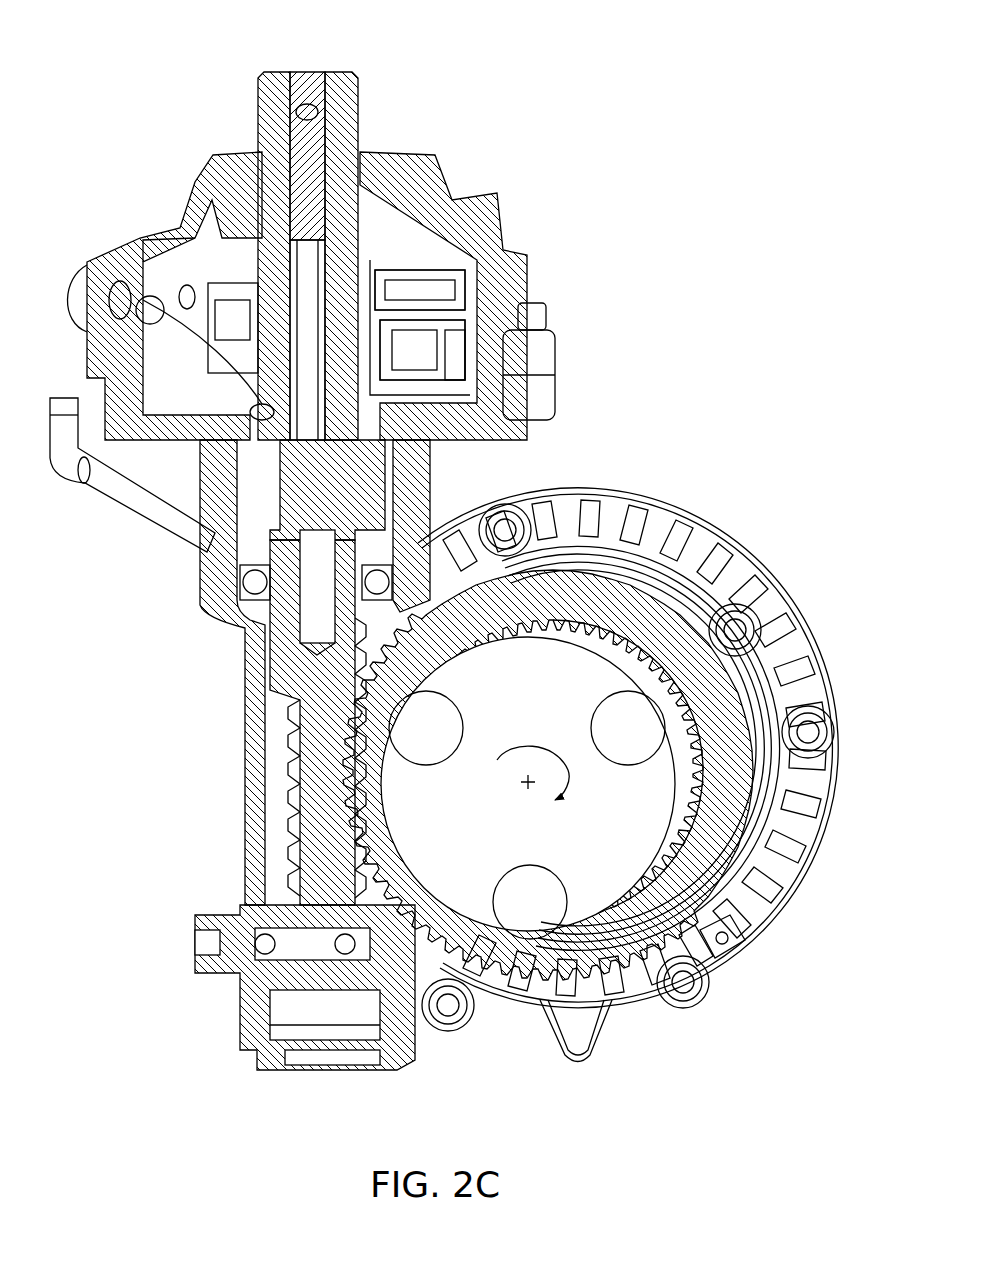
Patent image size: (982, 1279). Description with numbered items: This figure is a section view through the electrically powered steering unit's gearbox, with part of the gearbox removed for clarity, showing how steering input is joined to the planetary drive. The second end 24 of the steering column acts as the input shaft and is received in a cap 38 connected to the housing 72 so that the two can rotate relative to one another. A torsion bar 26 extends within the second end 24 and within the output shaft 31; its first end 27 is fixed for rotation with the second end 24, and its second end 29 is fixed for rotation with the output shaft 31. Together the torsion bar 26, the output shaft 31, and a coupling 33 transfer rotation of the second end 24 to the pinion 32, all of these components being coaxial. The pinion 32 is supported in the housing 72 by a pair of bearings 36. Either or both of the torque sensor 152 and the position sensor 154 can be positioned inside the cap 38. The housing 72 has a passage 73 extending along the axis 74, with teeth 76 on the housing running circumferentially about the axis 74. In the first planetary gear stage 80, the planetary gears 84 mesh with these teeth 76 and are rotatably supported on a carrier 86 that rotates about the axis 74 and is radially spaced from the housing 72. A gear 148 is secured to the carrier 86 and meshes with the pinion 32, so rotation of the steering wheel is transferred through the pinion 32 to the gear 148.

The second end of the steering column 24 is at (243, 97).
The torsion bar 26 is at (320, 247).
The first end of the torsion bar 27 is at (305, 90).
The second end of the torsion bar 29 is at (262, 412).
The output shaft 31 is at (213, 505).
The pinion 32 is at (322, 800).
The coupling 33 is at (388, 518).
The bearings 36 is at (255, 598).
The cap 38 is at (492, 284).
The housing 72 is at (770, 636).
The passage 73 is at (668, 612).
The axis 74 is at (556, 793).
The teeth 76 is at (755, 878).
The first planetary gear stage 80 is at (726, 954).
The planetary gears 84 is at (812, 738).
The carrier 86 is at (528, 788).
The gear 148 is at (603, 645).
The torque sensor 152 is at (430, 348).
The position sensor 154 is at (420, 325).